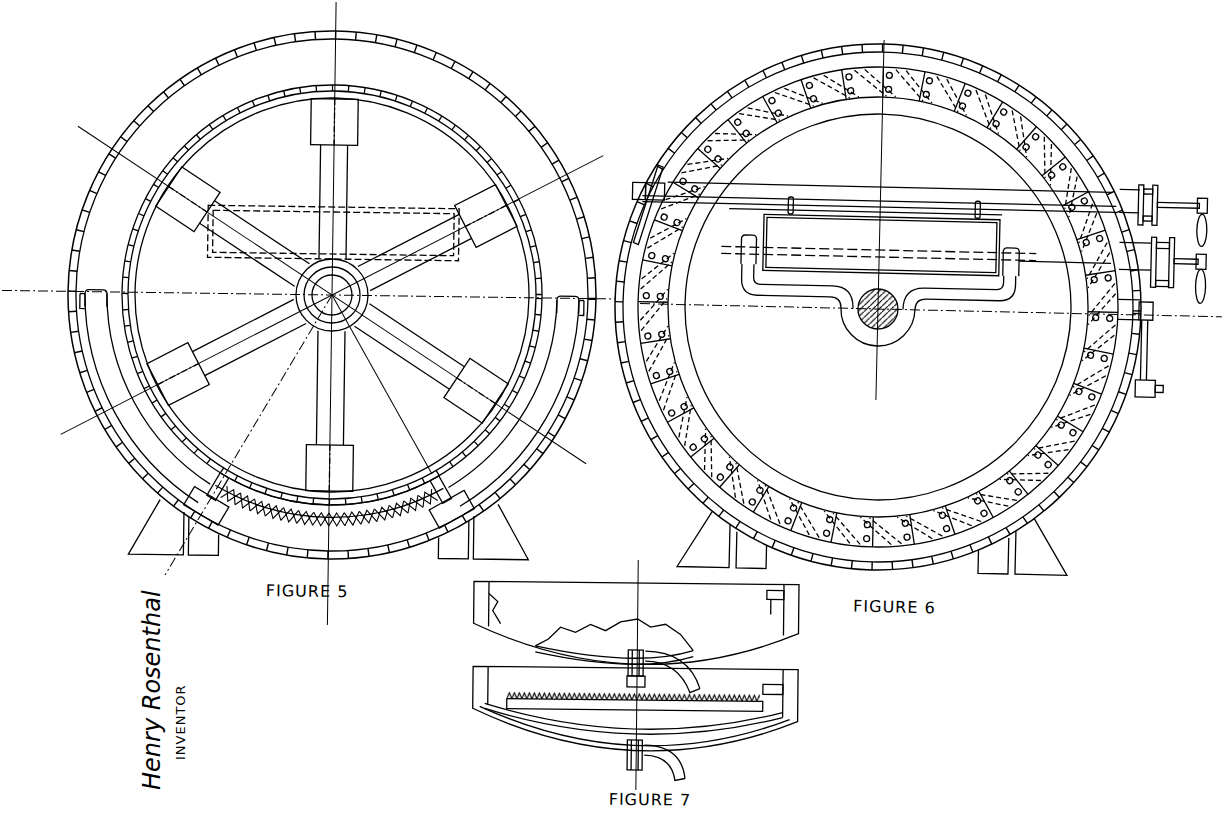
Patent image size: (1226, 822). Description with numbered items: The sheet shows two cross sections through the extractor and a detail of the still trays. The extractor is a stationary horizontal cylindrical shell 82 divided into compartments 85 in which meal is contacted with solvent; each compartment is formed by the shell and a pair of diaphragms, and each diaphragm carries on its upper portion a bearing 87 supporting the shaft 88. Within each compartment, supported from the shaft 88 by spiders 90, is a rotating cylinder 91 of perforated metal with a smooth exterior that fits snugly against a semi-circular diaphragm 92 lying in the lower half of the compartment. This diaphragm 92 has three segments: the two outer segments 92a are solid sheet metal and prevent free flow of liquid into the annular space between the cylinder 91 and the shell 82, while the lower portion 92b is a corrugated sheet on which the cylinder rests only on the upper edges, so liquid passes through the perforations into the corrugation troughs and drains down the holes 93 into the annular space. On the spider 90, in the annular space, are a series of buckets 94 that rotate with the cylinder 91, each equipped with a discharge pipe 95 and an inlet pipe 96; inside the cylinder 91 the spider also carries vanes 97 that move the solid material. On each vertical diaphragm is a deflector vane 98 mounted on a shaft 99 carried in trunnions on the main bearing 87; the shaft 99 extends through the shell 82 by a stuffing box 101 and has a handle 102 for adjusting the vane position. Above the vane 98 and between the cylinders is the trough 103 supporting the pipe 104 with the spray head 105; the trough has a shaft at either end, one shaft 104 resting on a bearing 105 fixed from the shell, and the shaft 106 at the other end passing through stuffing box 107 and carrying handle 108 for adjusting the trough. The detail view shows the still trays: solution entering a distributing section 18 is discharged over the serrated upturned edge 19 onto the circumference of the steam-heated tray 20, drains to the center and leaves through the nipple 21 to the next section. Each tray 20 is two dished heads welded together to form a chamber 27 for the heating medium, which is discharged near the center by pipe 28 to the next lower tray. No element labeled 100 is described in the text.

In FIG. 5, the cylindrical shell 82 is at (487, 86).
In FIG. 6, the cylindrical shell 82 is at (1008, 86).
In FIG. 5, the rotating cylinder 91 is at (247, 102).
In FIG. 5, the vanes 97 is at (357, 128).
In FIG. 5, the shaft 88 is at (370, 293).
In FIG. 6, the shaft 88 is at (871, 336).
In FIG. 5, the spiders 90 is at (233, 354).
In FIG. 5, the diaphragm 92 is at (167, 437).
In FIG. 5, the outer segments 92a is at (192, 456).
In FIG. 5, the lower portion 92b is at (332, 514).
In FIG. 5, the holes 93 is at (329, 515).
In FIG. 6, the buckets 94 is at (1020, 122).
In FIG. 6, the discharge pipe 95 is at (886, 307).
In FIG. 6, the inlet pipe 96 is at (1073, 393).
In FIG. 6, the pipe 104 is at (653, 177).
In FIG. 6, the spray head 105 is at (631, 192).
In FIG. 6, the trough 103 is at (863, 207).
In FIG. 6, the deflector vane 98 is at (879, 244).
In FIG. 6, the pipe connection 100 is at (739, 247).
In FIG. 6, the shaft 99 is at (1036, 259).
In FIG. 6, the compartment 85 is at (755, 309).
In FIG. 6, the bearing 87 is at (908, 332).
In FIG. 6, the stuffing box 107 is at (1125, 183).
In FIG. 6, the shaft 106 is at (1166, 205).
In FIG. 6, the handle 108 is at (1199, 190).
In FIG. 6, the stuffing box 101 is at (1170, 290).
In FIG. 6, the handle 102 is at (1198, 297).
In FIG. 7, the steam-heated tray 20 is at (446, 698).
In FIG. 7, the chamber 27 is at (790, 615).
In FIG. 7, the pipe 28 is at (715, 685).
In FIG. 7, the serrated upturned vertical circumferential edge 19 is at (517, 694).
In FIG. 7, the nipple 21 is at (627, 675).
In FIG. 7, the distributing section 18 is at (740, 708).